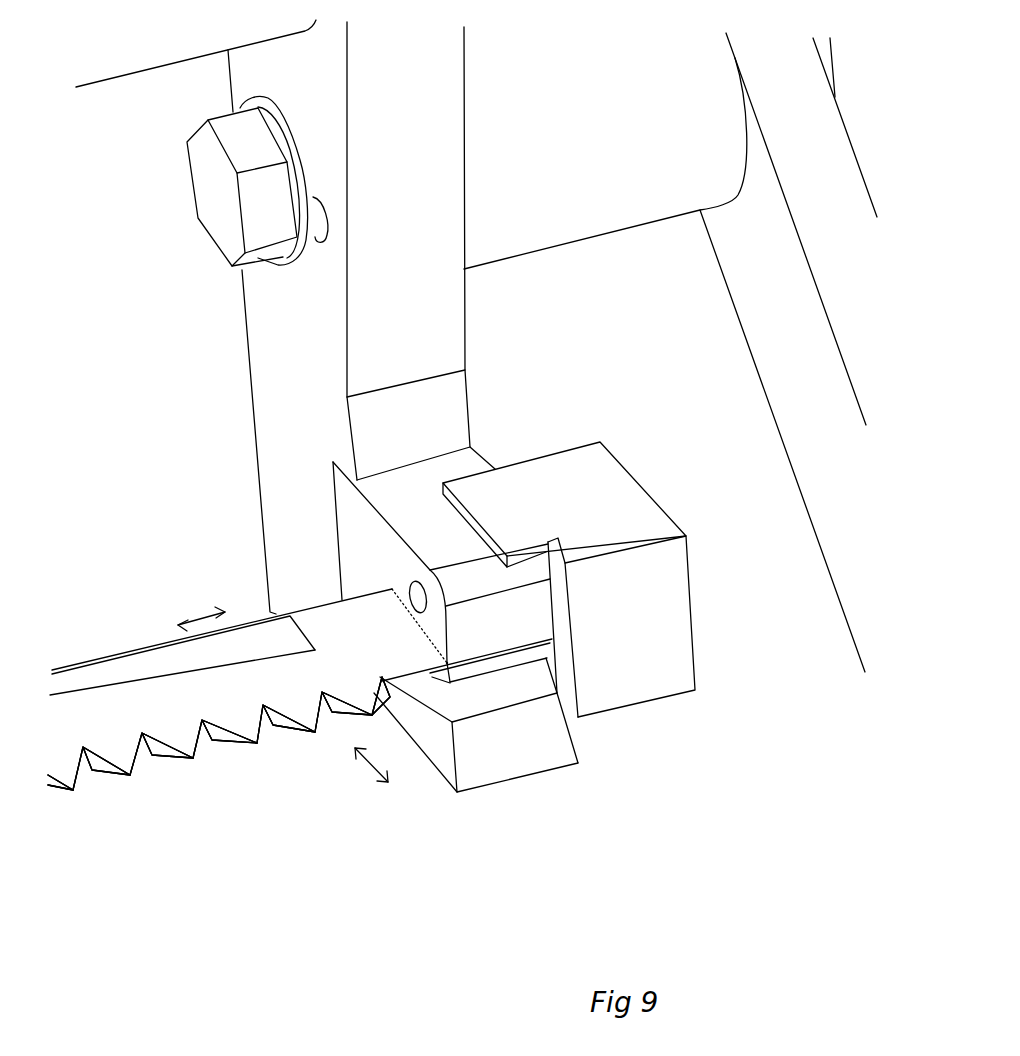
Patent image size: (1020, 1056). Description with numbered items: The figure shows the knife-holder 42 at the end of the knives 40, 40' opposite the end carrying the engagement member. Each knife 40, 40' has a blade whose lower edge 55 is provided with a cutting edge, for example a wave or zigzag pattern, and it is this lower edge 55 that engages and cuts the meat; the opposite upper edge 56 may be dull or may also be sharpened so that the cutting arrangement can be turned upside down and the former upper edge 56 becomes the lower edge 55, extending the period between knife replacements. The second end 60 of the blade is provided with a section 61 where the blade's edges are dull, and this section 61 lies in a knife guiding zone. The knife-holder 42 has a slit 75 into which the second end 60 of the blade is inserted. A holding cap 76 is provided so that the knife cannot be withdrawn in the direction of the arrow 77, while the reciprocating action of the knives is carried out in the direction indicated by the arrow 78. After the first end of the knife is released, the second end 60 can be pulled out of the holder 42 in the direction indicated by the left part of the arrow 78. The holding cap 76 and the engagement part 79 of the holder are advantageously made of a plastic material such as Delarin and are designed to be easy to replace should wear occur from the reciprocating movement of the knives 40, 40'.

The knife-holder 42 is at (518, 437).
The holding cap 76 is at (627, 493).
The slit 75 is at (315, 650).
The engagement part 79 is at (563, 753).
The section 61 is at (468, 662).
The second end 60 is at (403, 646).
The upper edge 56 is at (136, 645).
The arrow 78 is at (203, 612).
The lower edge 55 is at (217, 750).
The knife 40 is at (219, 766).
The knife 40' is at (219, 766).
The arrow 77 is at (363, 770).